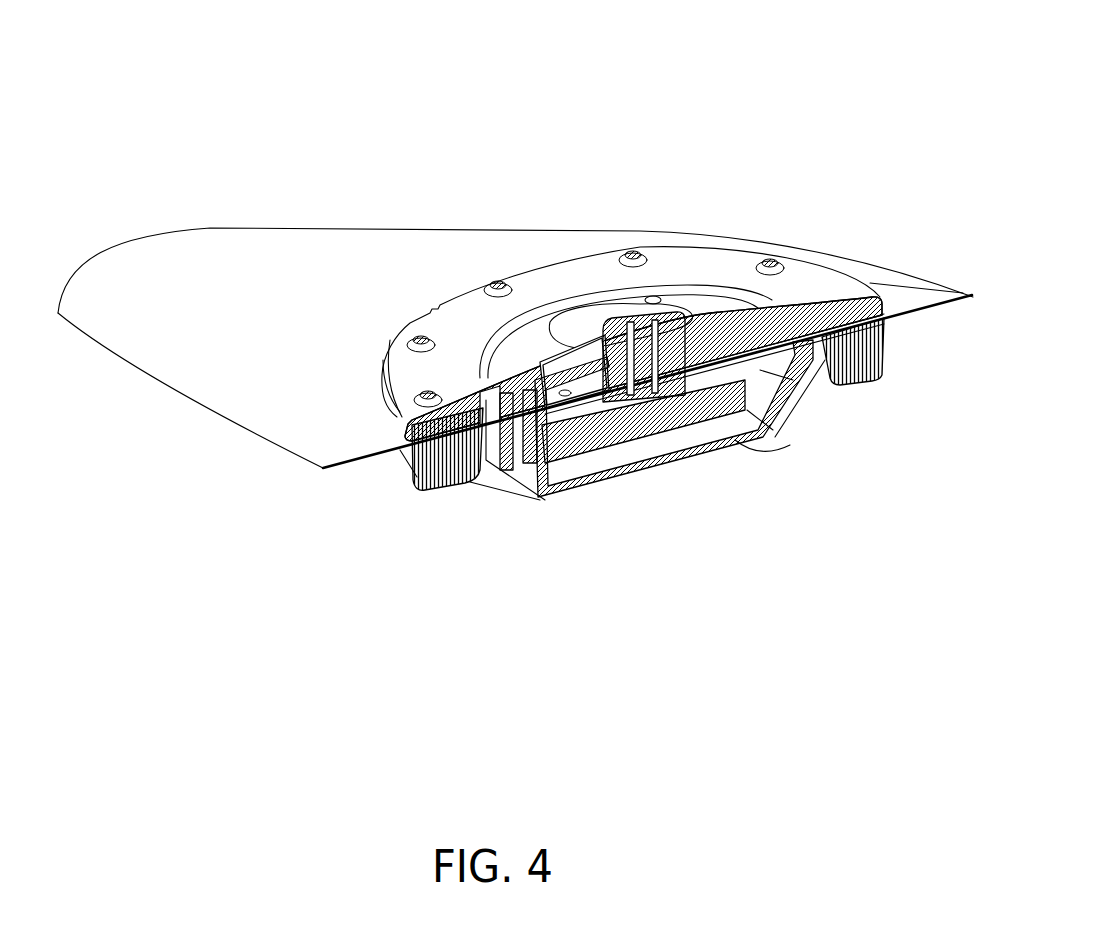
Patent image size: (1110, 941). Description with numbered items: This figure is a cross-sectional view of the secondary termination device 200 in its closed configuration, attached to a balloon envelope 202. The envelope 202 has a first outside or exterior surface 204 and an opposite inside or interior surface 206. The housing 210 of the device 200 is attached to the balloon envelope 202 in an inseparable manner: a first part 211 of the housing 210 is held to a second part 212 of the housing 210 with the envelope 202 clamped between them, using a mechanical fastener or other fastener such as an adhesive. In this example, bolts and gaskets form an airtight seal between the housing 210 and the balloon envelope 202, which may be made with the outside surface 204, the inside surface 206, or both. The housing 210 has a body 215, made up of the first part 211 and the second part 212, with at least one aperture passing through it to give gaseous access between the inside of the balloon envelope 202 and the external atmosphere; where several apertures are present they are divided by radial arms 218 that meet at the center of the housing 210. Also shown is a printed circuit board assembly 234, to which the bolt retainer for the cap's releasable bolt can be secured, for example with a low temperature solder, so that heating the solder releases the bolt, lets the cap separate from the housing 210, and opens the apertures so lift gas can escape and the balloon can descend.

The secondary termination device 200 is at (787, 90).
The balloon envelope 202 is at (194, 298).
The first outside or exterior surface 204 is at (917, 310).
The inside or interior surface 206 is at (940, 308).
The housing 210 is at (547, 258).
The first part of the housing 211 is at (383, 382).
The second part of the housing 212 is at (440, 485).
The body 215 is at (462, 293).
The radial arms 218 is at (712, 312).
The printed circuit board assembly 234 is at (662, 382).